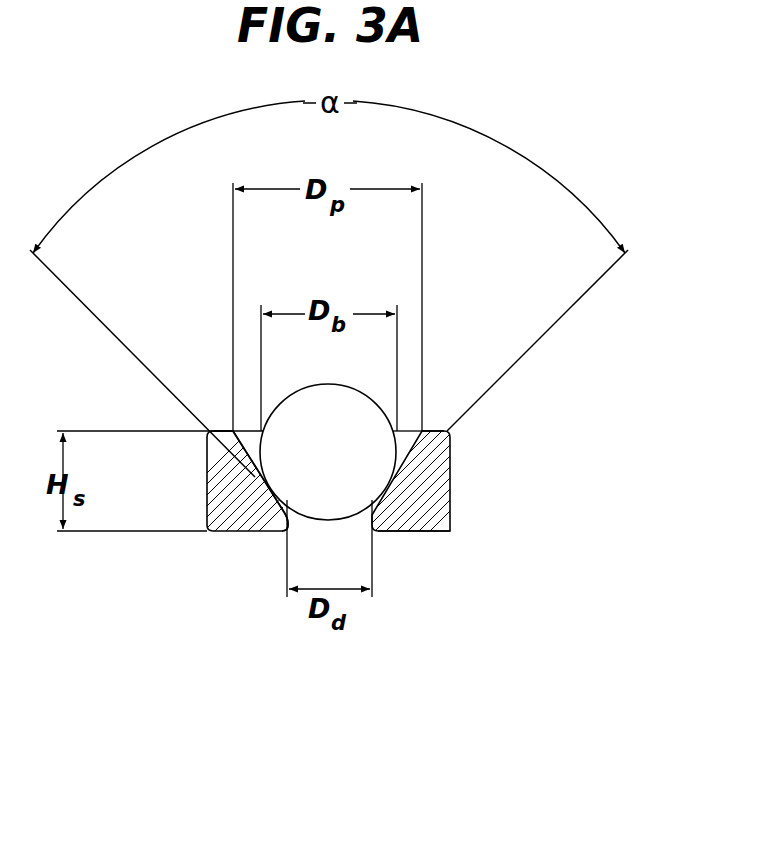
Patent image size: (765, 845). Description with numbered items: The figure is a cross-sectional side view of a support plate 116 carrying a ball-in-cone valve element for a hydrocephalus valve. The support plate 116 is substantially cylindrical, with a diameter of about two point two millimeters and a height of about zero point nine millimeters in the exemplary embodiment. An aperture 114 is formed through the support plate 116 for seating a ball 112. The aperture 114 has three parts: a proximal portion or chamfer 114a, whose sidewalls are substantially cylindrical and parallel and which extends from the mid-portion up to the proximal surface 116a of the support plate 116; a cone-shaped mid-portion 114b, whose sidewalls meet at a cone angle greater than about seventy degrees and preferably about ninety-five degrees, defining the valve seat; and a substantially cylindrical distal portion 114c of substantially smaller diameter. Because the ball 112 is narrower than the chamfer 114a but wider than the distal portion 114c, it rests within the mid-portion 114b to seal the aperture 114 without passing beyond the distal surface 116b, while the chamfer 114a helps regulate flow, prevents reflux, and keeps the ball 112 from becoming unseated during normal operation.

The ball 112 is at (367, 393).
The aperture 114 is at (414, 428).
The chamfer 114a is at (237, 450).
The mid-portion 114b is at (255, 470).
The distal portion 114c is at (285, 512).
The support plate 116 is at (453, 490).
The proximal surface 116a is at (440, 428).
The distal surface 116b is at (434, 534).